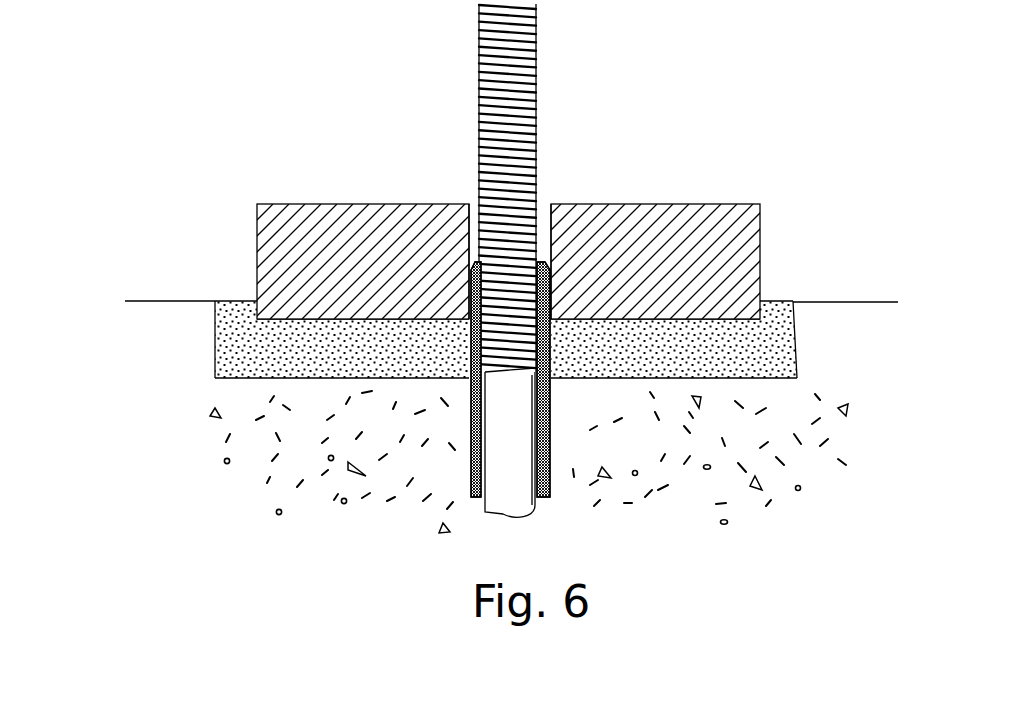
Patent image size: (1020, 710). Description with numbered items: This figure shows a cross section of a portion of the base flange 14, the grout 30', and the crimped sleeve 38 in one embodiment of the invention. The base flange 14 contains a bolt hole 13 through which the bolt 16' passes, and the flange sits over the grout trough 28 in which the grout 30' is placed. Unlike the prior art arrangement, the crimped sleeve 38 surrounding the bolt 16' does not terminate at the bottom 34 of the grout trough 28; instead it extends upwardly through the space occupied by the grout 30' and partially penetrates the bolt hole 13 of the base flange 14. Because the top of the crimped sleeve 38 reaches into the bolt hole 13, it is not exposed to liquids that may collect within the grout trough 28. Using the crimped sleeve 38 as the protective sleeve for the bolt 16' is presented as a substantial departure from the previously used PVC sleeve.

The threaded rod 16' is at (547, 260).
The bore hole 13 is at (543, 204).
The plate 14 is at (655, 204).
The surface of grout layer 30' is at (511, 254).
The grout layer 28 is at (795, 323).
The lower surface 34 is at (800, 380).
The sleeve 38 is at (550, 402).